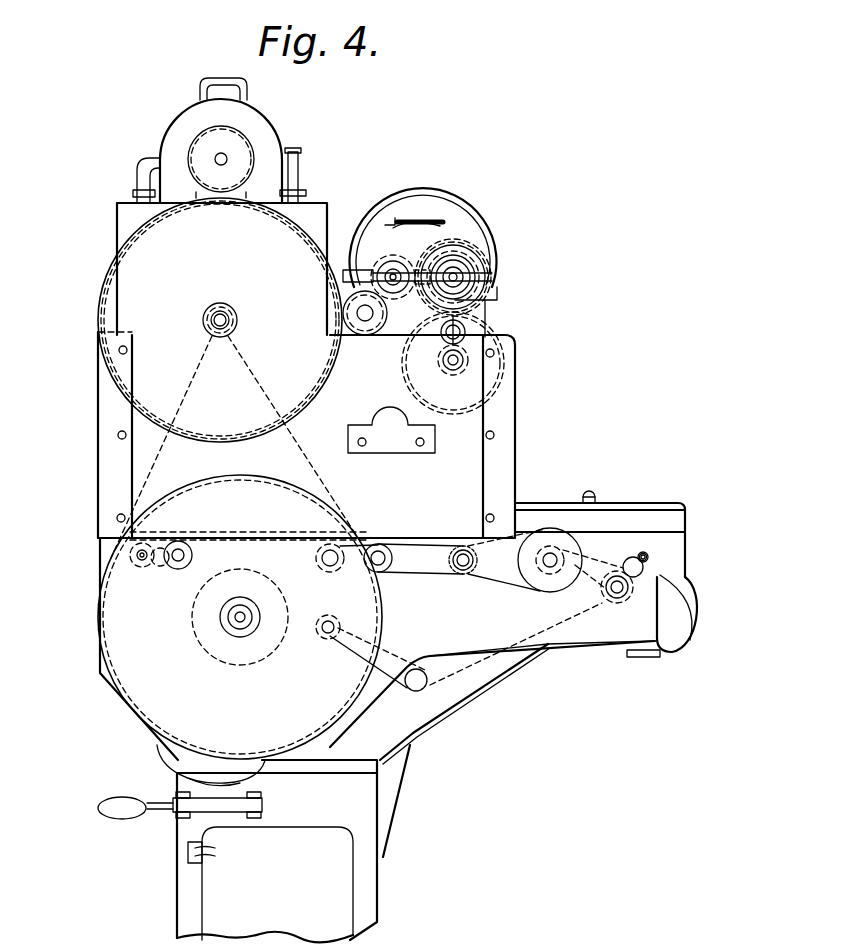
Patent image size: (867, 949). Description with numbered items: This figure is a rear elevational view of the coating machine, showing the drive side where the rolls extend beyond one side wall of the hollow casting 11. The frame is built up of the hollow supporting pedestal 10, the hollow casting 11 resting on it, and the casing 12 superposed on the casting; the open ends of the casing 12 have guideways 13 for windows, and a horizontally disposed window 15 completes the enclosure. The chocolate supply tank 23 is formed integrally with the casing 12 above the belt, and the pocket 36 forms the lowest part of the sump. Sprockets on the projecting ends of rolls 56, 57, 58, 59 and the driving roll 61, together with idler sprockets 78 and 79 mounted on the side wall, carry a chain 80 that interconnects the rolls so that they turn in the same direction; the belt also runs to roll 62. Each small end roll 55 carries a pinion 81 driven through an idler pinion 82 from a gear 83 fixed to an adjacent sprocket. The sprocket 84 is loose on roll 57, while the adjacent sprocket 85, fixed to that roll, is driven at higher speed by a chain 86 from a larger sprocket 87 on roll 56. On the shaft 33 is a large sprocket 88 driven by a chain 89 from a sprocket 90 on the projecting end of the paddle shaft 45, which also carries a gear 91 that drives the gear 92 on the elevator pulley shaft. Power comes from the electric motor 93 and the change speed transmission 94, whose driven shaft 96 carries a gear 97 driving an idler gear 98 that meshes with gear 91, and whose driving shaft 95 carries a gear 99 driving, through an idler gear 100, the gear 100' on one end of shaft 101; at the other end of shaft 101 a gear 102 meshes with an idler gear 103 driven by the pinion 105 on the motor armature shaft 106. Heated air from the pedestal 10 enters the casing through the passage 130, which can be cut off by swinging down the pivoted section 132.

The hollow supporting pedestal 10 is at (355, 829).
The hollow casting 11 is at (600, 645).
The casing 12 is at (495, 415).
The guideways 13 is at (100, 410).
The horizontally disposed window 15 is at (600, 505).
The supply tank 23 is at (322, 205).
The shaft 33 is at (232, 623).
The pocket 36 is at (157, 767).
The shaft 45 is at (232, 322).
The end rolls 55 is at (140, 563).
The roll 56 is at (547, 567).
The roll 57 is at (458, 573).
The roll 58 is at (382, 572).
The roll 59 is at (328, 572).
The driving roll 61 is at (616, 603).
The roll 62 is at (326, 640).
The idler sprocket 78 is at (193, 560).
The idler sprocket 79 is at (408, 690).
The chain 80 is at (378, 641).
The pinion 81 is at (142, 562).
The idler pinion 82 is at (158, 566).
The gear 83 is at (200, 578).
The sprocket 84 is at (468, 576).
The sprocket 85 is at (477, 562).
The chain 86 is at (512, 590).
The larger sprocket 87 is at (549, 554).
The large sprocket 88 is at (150, 708).
The chain 89 is at (330, 490).
The sprocket 90 is at (220, 337).
The gear 91 is at (334, 366).
The gear 92 is at (235, 152).
The electric motor 93 is at (448, 218).
The change speed transmission 94 is at (378, 243).
The driving shaft 95 is at (466, 270).
The driven shaft 96 is at (360, 270).
The gear 97 is at (398, 288).
The idler gear 98 is at (366, 325).
The gear 99 is at (490, 283).
The idler gear 100 is at (488, 323).
The gear 100' is at (478, 363).
The shaft 101 is at (453, 368).
The gear 102 is at (505, 379).
The idler gear 103 is at (473, 242).
The pinion 105 is at (428, 228).
The armature shaft 106 is at (418, 258).
The passage 130 is at (563, 655).
The pivoted section 132 is at (663, 622).